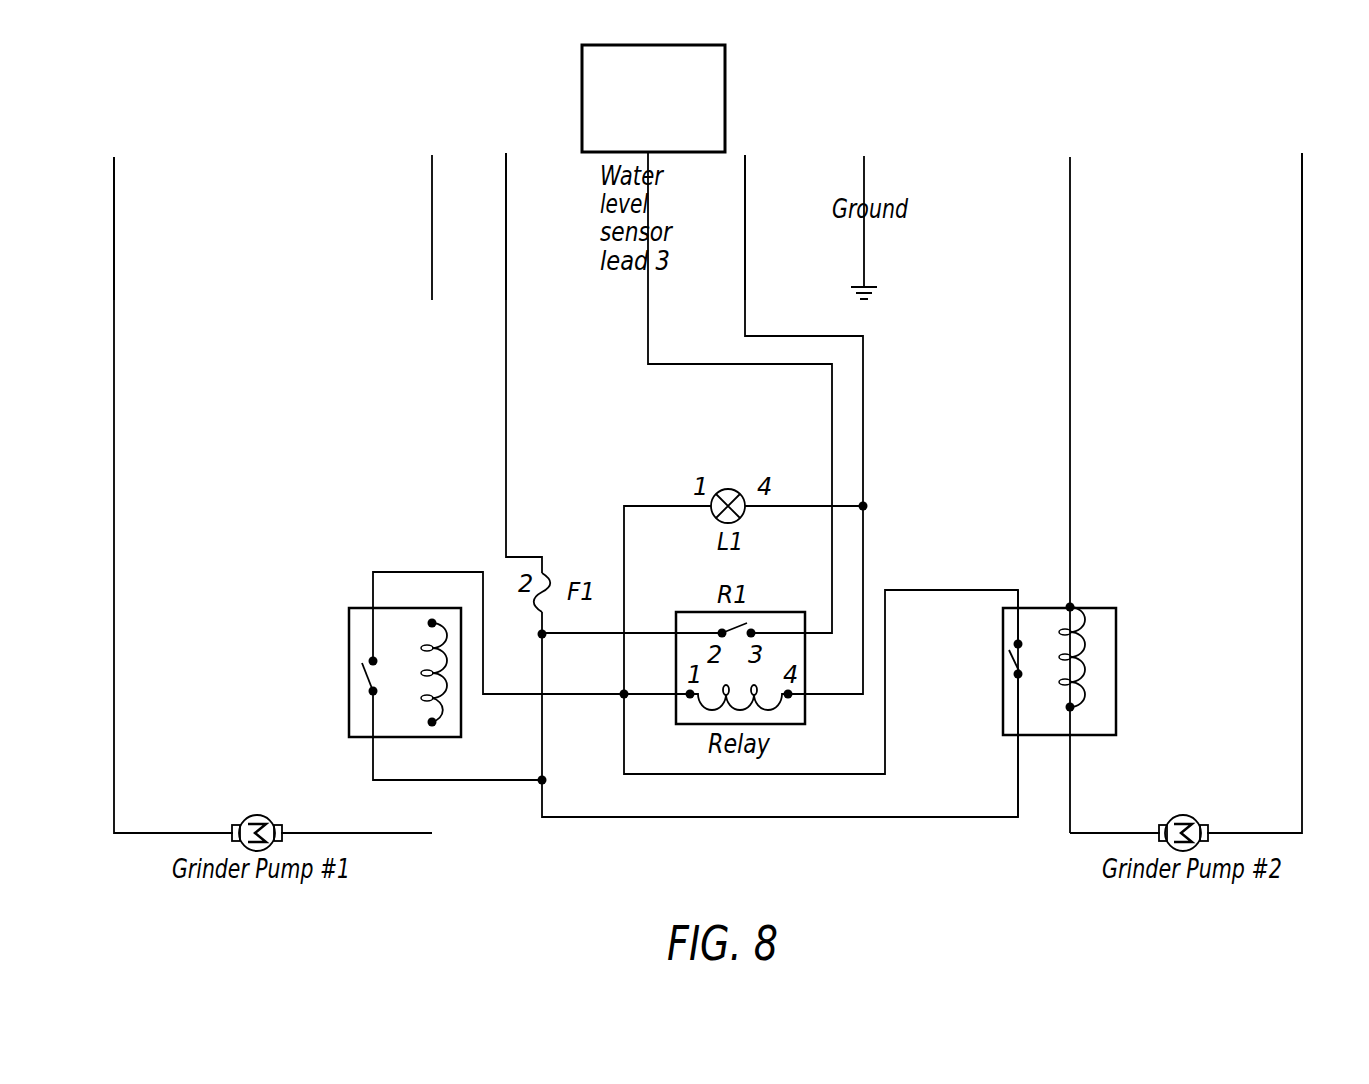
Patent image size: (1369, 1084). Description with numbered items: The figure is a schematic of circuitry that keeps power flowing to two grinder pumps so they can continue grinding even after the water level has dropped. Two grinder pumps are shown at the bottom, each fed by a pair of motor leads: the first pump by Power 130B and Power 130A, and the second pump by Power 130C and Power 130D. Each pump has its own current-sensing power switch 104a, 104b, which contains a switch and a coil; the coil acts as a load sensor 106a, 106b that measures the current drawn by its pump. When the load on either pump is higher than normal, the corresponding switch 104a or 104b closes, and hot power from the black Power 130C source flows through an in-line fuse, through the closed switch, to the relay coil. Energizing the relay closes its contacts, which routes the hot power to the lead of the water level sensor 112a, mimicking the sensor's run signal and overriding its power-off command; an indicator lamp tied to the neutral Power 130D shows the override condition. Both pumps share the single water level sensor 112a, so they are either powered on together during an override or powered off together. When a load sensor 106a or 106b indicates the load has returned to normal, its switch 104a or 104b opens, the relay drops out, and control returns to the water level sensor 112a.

The Power source (motor lead) 130A is at (371, 198).
The Power source (motor lead) 130B is at (96, 198).
The Power source (Blk) hot 130C is at (807, 450).
The Power source (White) neutral 130D is at (1056, 175).
The water level sensor 112a is at (681, 137).
The current-sensing power switch 104a is at (377, 761).
The current-sensing power switch 104b is at (1070, 568).
The load sensor 106a is at (443, 722).
The load sensor 106b is at (1000, 553).